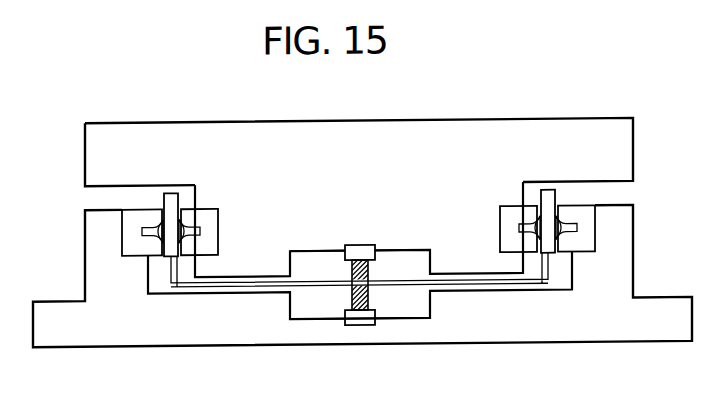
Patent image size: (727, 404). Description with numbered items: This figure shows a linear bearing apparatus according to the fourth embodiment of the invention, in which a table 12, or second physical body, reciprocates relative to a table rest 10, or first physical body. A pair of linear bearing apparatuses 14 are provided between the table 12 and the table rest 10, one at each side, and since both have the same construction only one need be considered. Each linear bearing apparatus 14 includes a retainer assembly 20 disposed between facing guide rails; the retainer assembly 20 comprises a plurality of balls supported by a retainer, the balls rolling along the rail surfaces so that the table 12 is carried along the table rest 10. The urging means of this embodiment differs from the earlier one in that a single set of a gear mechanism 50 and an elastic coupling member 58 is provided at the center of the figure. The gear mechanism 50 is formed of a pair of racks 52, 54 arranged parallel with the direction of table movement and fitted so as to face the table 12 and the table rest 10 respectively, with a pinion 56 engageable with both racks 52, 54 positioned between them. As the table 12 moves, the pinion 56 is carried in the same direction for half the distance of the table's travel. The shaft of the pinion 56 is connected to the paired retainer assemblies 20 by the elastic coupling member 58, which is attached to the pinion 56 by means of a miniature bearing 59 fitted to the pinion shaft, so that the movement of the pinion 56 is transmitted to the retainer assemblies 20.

The table rest 10 is at (507, 327).
The table 12 is at (416, 130).
The linear bearing apparatus 14 is at (213, 193).
The retainer assembly 20 is at (174, 196).
The gear mechanism 50 is at (383, 272).
The rack 52 is at (359, 329).
The rack 54 is at (358, 253).
The pinion 56 is at (352, 275).
The elastic coupling member 58 is at (317, 284).
The miniature bearing 59 is at (367, 295).